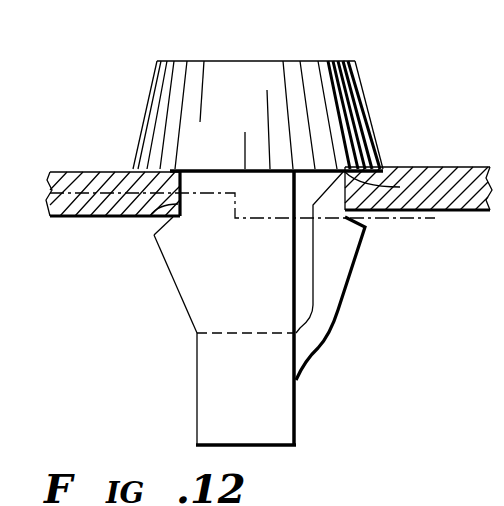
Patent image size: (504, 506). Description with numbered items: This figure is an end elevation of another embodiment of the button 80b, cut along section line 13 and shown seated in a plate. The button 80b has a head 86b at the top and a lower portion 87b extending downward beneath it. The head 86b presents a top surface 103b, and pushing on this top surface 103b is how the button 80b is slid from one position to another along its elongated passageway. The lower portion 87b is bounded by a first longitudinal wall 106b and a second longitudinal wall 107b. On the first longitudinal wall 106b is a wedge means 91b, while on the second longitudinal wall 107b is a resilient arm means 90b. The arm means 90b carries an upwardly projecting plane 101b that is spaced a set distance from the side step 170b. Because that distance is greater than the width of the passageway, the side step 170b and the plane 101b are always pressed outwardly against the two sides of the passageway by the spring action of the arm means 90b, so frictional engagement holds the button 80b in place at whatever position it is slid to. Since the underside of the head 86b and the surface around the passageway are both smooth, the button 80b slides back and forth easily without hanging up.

The button 80b is at (254, 72).
The top surface 103b is at (230, 34).
The head 86b is at (342, 61).
The upwardly projecting plane 101b is at (387, 168).
The section line 13 is at (107, 228).
The side step 170b is at (150, 215).
The wedge means 91b is at (185, 280).
The first longitudinal wall 106b is at (197, 365).
The lower portion 87b is at (210, 415).
The second longitudinal wall 107b is at (298, 414).
The arm means 90b is at (338, 276).